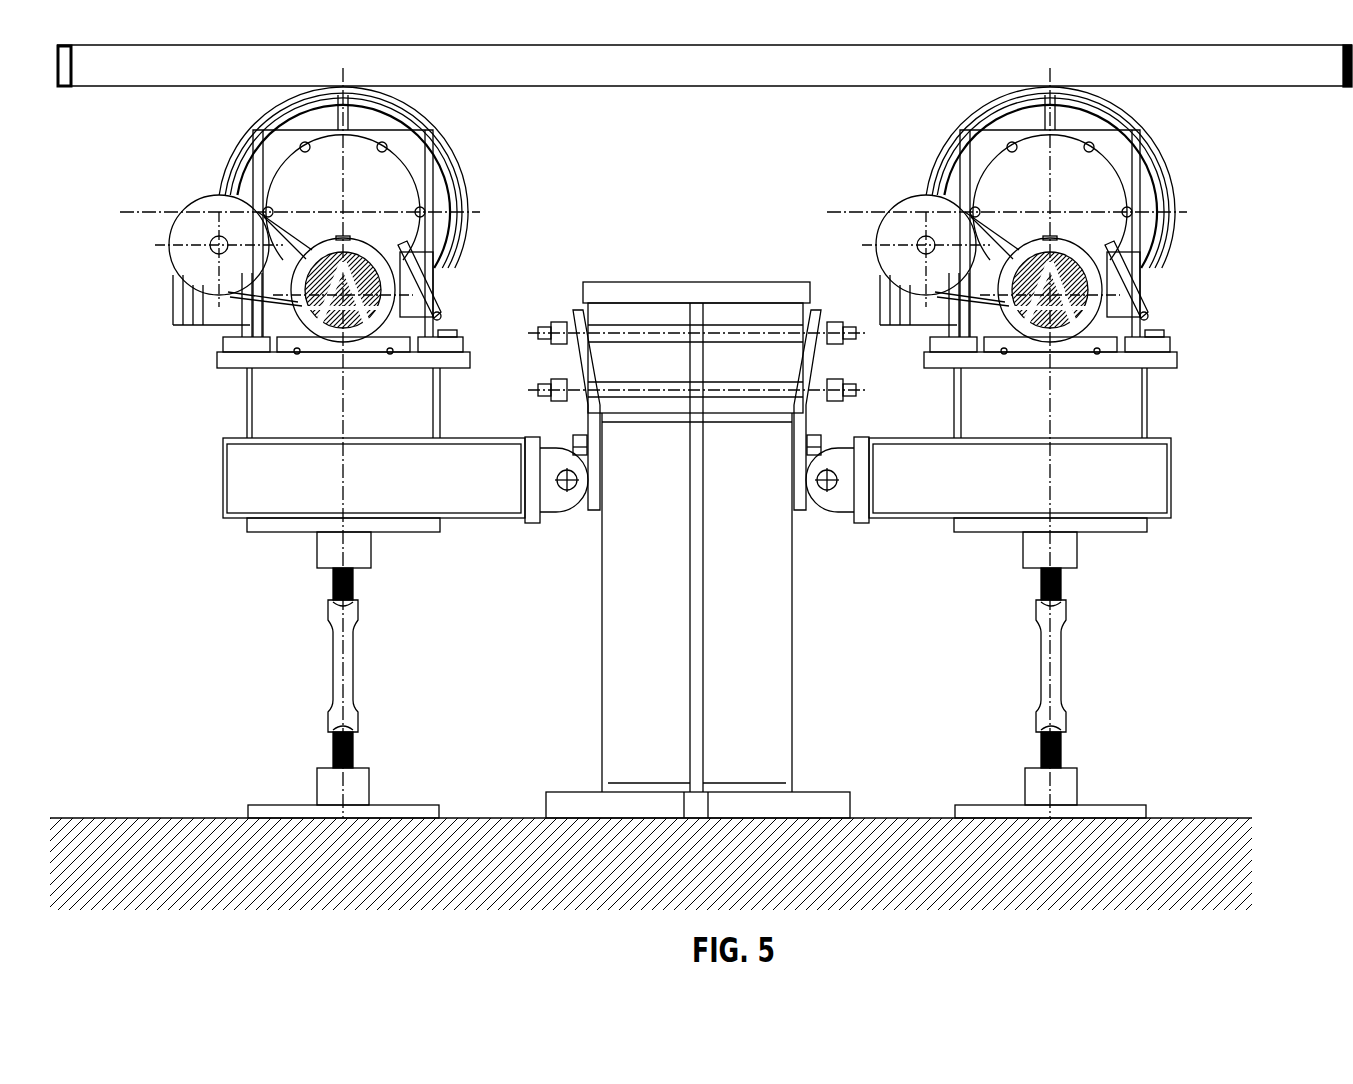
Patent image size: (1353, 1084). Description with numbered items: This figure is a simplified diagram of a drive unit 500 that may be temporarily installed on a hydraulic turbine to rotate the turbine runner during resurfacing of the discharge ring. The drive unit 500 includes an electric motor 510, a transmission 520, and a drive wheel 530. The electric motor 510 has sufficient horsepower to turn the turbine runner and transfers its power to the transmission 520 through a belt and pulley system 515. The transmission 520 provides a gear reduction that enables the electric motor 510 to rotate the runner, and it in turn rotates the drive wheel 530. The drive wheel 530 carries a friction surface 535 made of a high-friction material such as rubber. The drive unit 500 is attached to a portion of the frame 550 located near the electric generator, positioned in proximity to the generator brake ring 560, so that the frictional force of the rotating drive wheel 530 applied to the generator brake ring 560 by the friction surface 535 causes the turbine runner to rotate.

The drive unit 500 is at (730, 138).
The electric motor 510 is at (300, 312).
The belt and pulley system 515 is at (181, 188).
The transmission 520 is at (277, 184).
The drive wheel 530 is at (457, 190).
The friction surface 535 is at (467, 253).
The frame 550 is at (695, 283).
The generator brake ring 560 is at (544, 75).